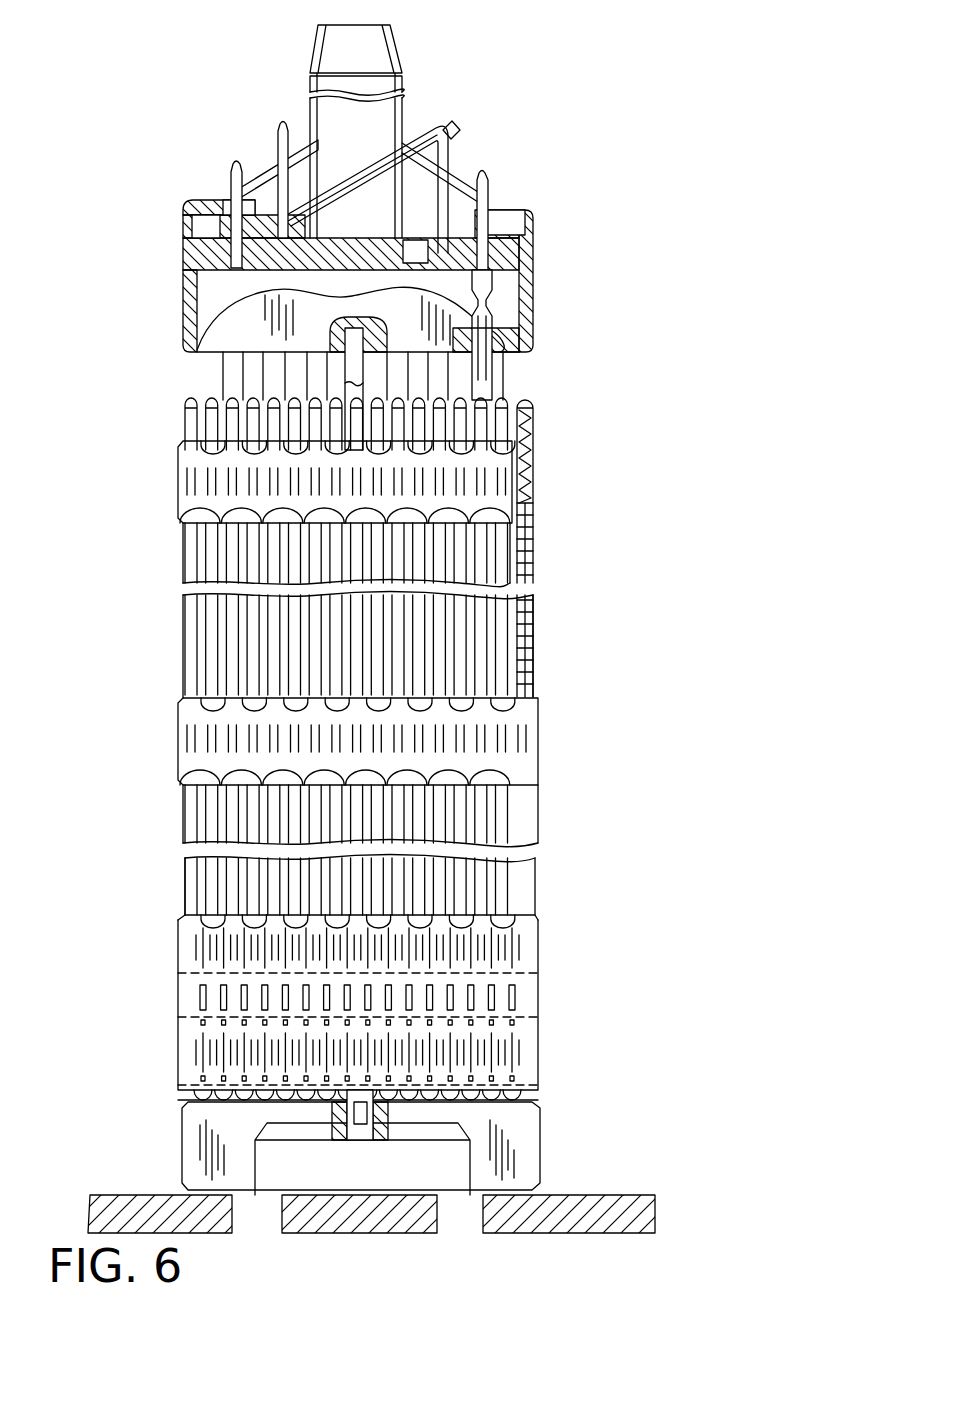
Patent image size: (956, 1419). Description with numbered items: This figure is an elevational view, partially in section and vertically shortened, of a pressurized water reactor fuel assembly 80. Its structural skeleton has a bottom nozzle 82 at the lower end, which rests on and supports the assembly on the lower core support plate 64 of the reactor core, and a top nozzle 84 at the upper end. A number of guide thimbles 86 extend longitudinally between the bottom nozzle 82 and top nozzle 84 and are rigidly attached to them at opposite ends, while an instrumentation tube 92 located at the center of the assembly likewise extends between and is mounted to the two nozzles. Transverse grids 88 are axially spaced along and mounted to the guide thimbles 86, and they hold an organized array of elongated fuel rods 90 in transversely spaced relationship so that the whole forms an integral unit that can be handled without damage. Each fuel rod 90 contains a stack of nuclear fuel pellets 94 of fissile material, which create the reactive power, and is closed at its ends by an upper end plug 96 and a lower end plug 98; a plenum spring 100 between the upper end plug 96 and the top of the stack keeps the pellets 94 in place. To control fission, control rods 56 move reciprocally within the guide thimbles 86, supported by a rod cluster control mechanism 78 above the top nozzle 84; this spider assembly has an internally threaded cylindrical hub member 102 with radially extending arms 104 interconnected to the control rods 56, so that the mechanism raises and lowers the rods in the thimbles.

The control rods 56 is at (500, 316).
The lower core support plate 64 is at (577, 1195).
The rod cluster control mechanism 78 is at (448, 125).
The fuel assembly 80 is at (613, 269).
The bottom nozzle 82 is at (545, 1142).
The top nozzle 84 is at (536, 255).
The guide thimbles 86 is at (222, 382).
The transverse grids 88 is at (180, 493).
The fuel rods 90 is at (180, 655).
The instrumentation tube 92 is at (366, 1130).
The nuclear fuel pellets 94 is at (533, 556).
The upper end plug 96 is at (535, 405).
The lower end plug 98 is at (540, 1085).
The plenum spring 100 is at (533, 470).
The cylindrical hub member 102 is at (400, 114).
The arms 104 is at (262, 177).